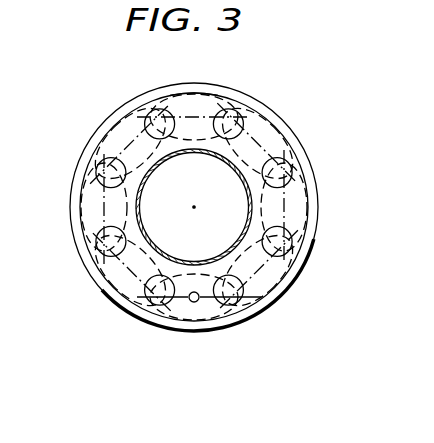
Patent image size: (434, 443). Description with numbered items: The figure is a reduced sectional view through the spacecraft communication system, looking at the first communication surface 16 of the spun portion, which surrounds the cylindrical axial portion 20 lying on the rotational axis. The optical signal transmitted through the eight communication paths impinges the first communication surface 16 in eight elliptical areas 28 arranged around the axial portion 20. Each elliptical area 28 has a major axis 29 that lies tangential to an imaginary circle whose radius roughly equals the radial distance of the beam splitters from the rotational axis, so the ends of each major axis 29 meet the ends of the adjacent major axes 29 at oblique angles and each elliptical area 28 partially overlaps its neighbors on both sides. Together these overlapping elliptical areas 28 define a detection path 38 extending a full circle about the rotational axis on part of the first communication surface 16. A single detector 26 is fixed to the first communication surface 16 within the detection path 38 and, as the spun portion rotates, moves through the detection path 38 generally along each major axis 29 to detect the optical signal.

The first communication surface 16 is at (172, 331).
The axial portion 20 is at (136, 188).
The detector 26 is at (196, 304).
The elliptical area 28 is at (127, 122).
The major axis 29 is at (201, 95).
The detection path 38 is at (104, 288).